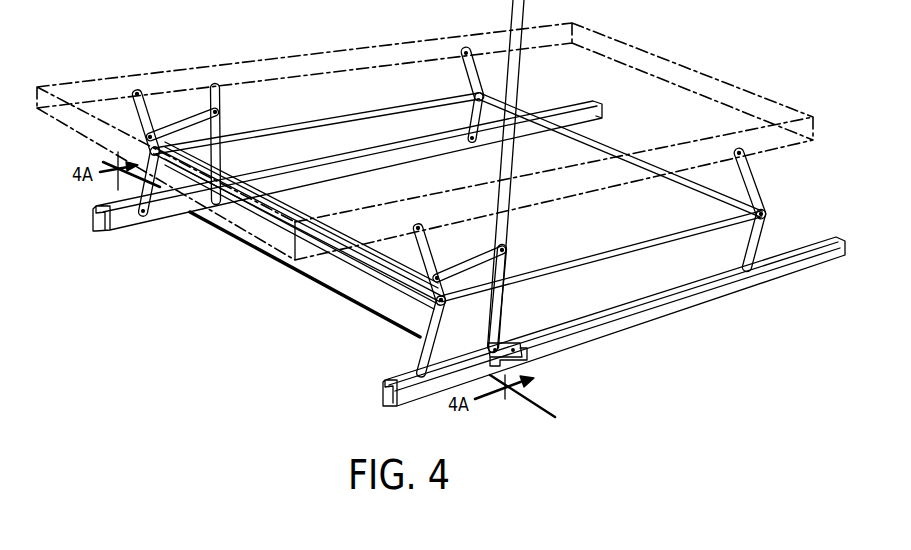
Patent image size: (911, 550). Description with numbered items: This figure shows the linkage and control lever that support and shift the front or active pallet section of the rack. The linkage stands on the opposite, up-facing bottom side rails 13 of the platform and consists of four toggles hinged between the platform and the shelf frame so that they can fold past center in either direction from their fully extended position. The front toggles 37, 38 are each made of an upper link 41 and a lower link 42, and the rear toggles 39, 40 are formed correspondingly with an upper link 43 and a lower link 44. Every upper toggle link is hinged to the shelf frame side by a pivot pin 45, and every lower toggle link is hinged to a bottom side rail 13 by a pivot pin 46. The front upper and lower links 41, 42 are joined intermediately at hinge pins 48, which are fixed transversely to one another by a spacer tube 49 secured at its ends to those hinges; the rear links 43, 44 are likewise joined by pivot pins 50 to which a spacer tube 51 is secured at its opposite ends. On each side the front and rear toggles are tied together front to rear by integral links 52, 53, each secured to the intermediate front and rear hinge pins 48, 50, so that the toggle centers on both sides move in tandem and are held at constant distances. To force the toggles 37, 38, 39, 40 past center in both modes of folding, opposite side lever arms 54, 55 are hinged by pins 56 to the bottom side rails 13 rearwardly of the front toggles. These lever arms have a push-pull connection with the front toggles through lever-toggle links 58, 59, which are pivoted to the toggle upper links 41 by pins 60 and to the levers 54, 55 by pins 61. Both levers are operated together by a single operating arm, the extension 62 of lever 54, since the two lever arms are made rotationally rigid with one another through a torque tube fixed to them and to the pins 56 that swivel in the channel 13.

The bottom side rails 13 is at (370, 167).
The front toggle 37 is at (394, 305).
The front toggle 38 is at (124, 137).
The rear toggle 39 is at (778, 184).
The rear toggle 40 is at (459, 82).
The upper link 41 is at (149, 113).
The lower link 42 is at (417, 352).
The upper link 43 is at (744, 178).
The lower link 44 is at (757, 243).
The pivot pin 45 is at (138, 92).
The pivot pin 46 is at (146, 218).
The hinge pin 48 is at (447, 302).
The spacer tube 49 is at (278, 213).
The pivot pin 50 is at (766, 214).
The spacer tube 51 is at (593, 137).
The integral link 52 is at (612, 258).
The integral link 53 is at (342, 117).
The lever arm 54 is at (507, 267).
The lever arm 55 is at (218, 157).
The pin 56 is at (517, 340).
The lever-toggle link 58 is at (500, 248).
The lever-toggle link 59 is at (192, 120).
The pin 60 is at (147, 134).
The pin 61 is at (218, 113).
The extension 62 is at (510, 157).